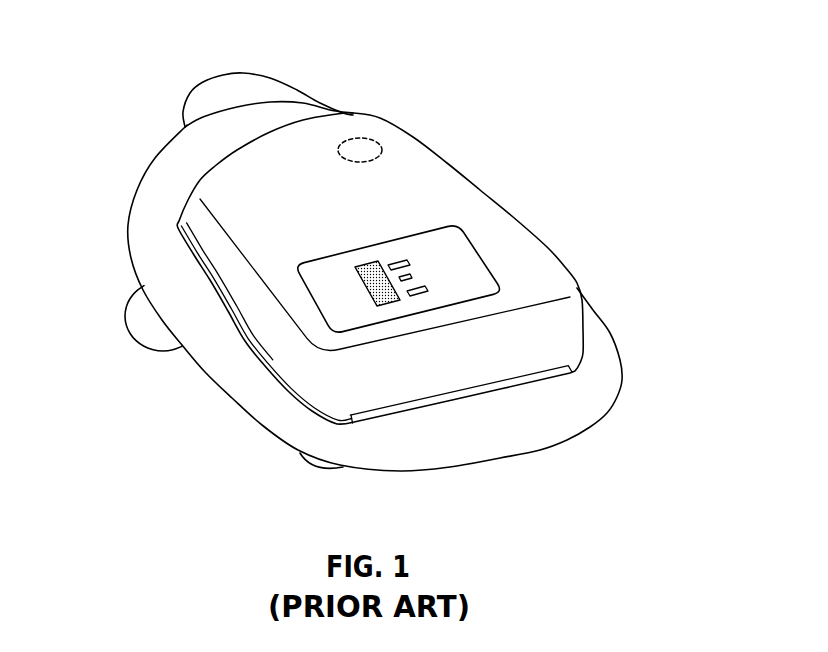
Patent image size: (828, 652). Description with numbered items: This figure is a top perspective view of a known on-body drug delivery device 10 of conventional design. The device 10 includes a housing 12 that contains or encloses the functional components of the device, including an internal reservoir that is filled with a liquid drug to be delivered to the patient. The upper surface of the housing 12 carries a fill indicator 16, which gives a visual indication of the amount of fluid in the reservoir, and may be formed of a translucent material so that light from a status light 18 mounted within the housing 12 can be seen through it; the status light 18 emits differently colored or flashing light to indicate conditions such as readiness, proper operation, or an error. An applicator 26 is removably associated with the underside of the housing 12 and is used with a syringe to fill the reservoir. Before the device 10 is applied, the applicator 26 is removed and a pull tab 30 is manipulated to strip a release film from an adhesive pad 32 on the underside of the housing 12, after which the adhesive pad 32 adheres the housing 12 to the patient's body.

The on-body device 10 is at (344, 269).
The housing 12 is at (542, 257).
The fill indicator 16 is at (357, 287).
The status light 18 is at (363, 134).
The applicator 26 is at (245, 85).
The pull tab 30 is at (140, 315).
The adhesive pad 32 is at (480, 450).